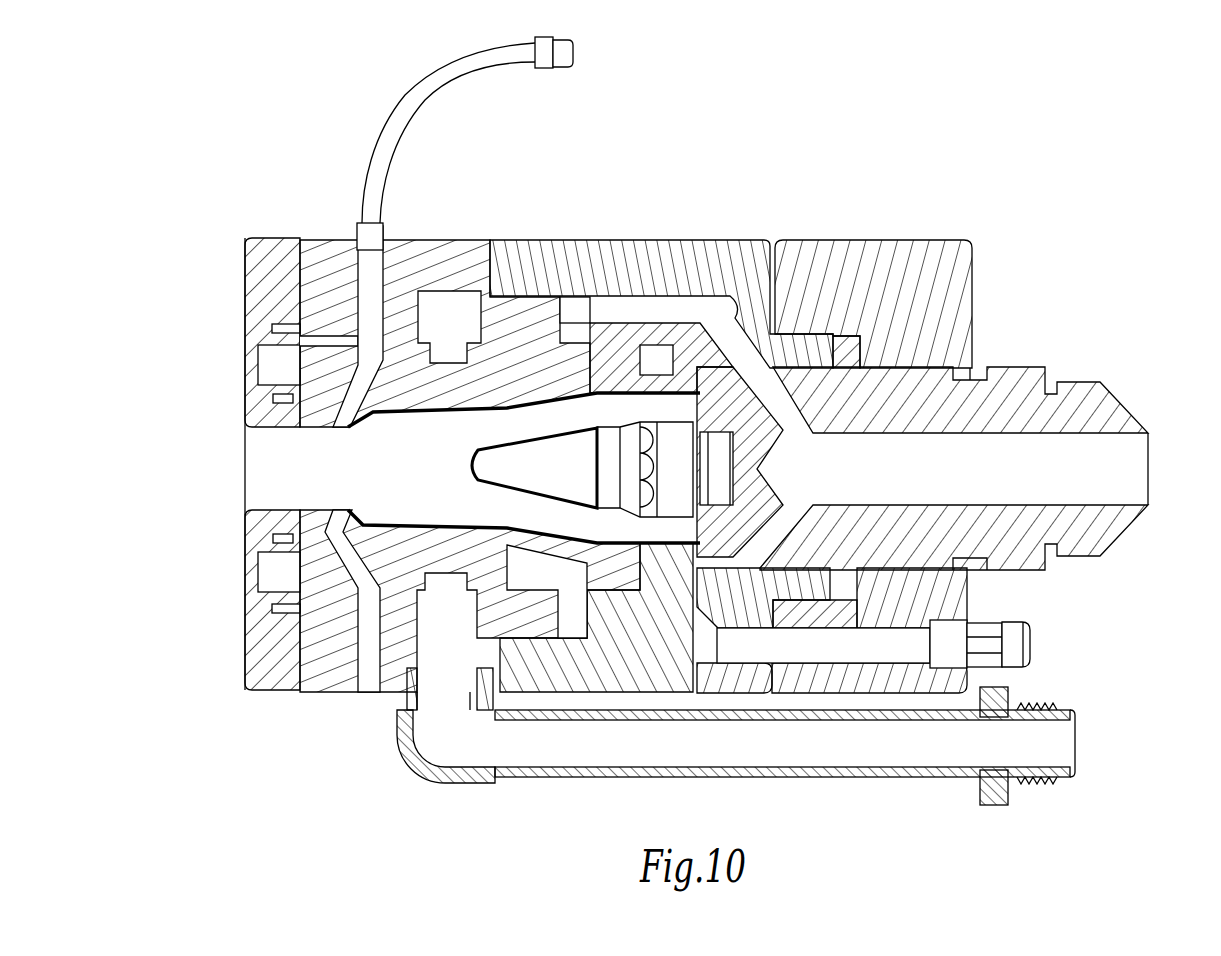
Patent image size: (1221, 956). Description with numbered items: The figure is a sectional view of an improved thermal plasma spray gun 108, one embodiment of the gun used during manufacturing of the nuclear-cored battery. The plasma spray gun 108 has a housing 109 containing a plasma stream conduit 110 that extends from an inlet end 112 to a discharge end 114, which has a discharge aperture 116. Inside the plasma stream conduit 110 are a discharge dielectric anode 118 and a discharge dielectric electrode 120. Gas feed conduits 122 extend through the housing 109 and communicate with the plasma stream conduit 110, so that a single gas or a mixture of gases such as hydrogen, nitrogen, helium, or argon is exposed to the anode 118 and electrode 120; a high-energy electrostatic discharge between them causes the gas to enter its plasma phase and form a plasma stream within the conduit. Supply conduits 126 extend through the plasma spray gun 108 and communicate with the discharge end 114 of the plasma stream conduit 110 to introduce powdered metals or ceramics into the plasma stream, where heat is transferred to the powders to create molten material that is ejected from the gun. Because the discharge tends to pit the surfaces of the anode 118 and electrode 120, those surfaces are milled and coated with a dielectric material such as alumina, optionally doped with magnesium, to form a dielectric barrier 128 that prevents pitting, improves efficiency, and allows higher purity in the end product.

The thermal plasma spray gun 108 is at (825, 195).
The housing 109 is at (938, 240).
The plasma stream conduit 110 is at (407, 478).
The inlet end 112 is at (670, 400).
The discharge end 114 is at (298, 460).
The discharge aperture 116 is at (358, 511).
The discharge dielectric anode 118 is at (300, 330).
The discharge dielectric electrode 120 is at (567, 478).
The gas feed conduits 122 is at (690, 623).
The supply conduits 126 is at (300, 383).
The dielectric barrier 128 is at (460, 414).